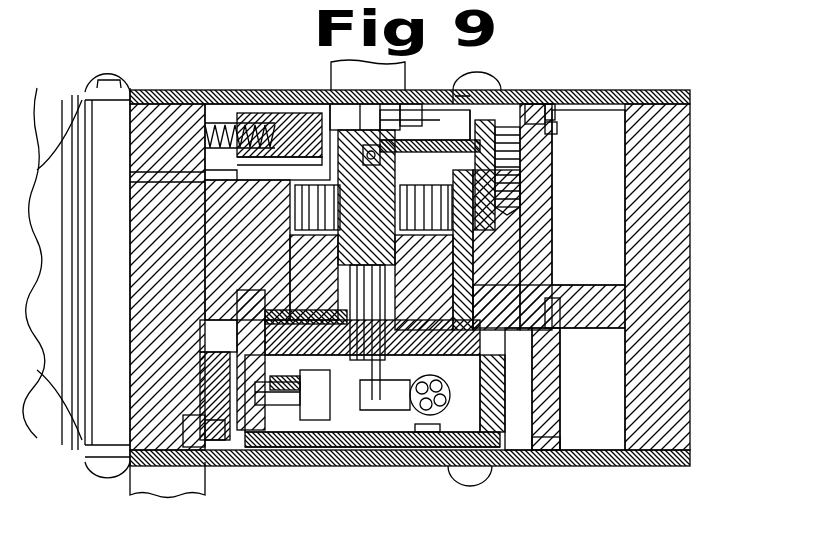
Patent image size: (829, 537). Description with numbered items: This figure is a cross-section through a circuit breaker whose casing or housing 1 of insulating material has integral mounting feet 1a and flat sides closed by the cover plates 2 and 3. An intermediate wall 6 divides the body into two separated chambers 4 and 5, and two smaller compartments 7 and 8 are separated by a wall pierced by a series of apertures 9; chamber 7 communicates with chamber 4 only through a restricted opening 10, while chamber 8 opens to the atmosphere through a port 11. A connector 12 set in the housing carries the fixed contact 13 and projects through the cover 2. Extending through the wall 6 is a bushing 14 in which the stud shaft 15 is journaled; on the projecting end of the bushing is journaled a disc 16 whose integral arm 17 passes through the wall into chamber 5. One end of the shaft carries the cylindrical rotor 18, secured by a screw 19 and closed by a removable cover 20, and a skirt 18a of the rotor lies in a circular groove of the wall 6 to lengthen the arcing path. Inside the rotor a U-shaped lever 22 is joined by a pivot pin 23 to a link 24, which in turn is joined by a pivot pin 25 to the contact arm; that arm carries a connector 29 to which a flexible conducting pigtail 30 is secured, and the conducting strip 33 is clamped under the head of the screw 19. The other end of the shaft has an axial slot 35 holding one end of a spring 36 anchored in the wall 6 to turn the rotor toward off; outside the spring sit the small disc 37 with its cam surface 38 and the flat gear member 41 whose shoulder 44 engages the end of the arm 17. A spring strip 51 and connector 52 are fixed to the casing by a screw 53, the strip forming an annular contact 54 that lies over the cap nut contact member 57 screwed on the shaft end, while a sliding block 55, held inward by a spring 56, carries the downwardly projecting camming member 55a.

The casing or housing 1 is at (690, 289).
The mounting feet 1a is at (37, 372).
The cover plate 2 is at (545, 469).
The cover plate 3 is at (618, 93).
The chamber 4 is at (510, 468).
The chamber 5 is at (205, 100).
The intermediate wall 6 is at (200, 238).
The smaller compartment 7 is at (598, 413).
The smaller compartment 8 is at (617, 183).
The apertures 9 is at (595, 302).
The restricted opening 10 is at (548, 441).
The port 11 is at (592, 108).
The connector 12 is at (200, 498).
The contact 13 is at (215, 468).
The bushing or bearing member 14 is at (555, 244).
The stud shaft 15 is at (555, 268).
The disc 16 is at (505, 360).
The arm 17 is at (555, 218).
The rotor 18 is at (455, 470).
The skirt 18a is at (575, 332).
The screw 19 is at (375, 393).
The removable cover 20 is at (398, 468).
The U-shaped lever 22 is at (262, 468).
The pivot pin 23 is at (322, 468).
The link 24 is at (293, 468).
The pivot pin 25 is at (350, 468).
The connector 29 is at (378, 468).
The flexible conducting pigtail 30 is at (425, 468).
The conducting strip 33 is at (322, 400).
The axial slot 35 is at (420, 150).
The spring 36 is at (555, 178).
The small disc 37 is at (555, 160).
The cam surface 38 is at (135, 175).
The disc or gear member 41 is at (328, 92).
The shoulder 44 is at (552, 134).
The spring strip 51 is at (490, 90).
The connector 52 is at (368, 75).
The screw 53 is at (538, 90).
The annular contact 54 is at (455, 98).
The block 55 is at (268, 112).
The camming member 55a is at (159, 90).
The spring 56 is at (222, 112).
The contact member 57 is at (405, 106).